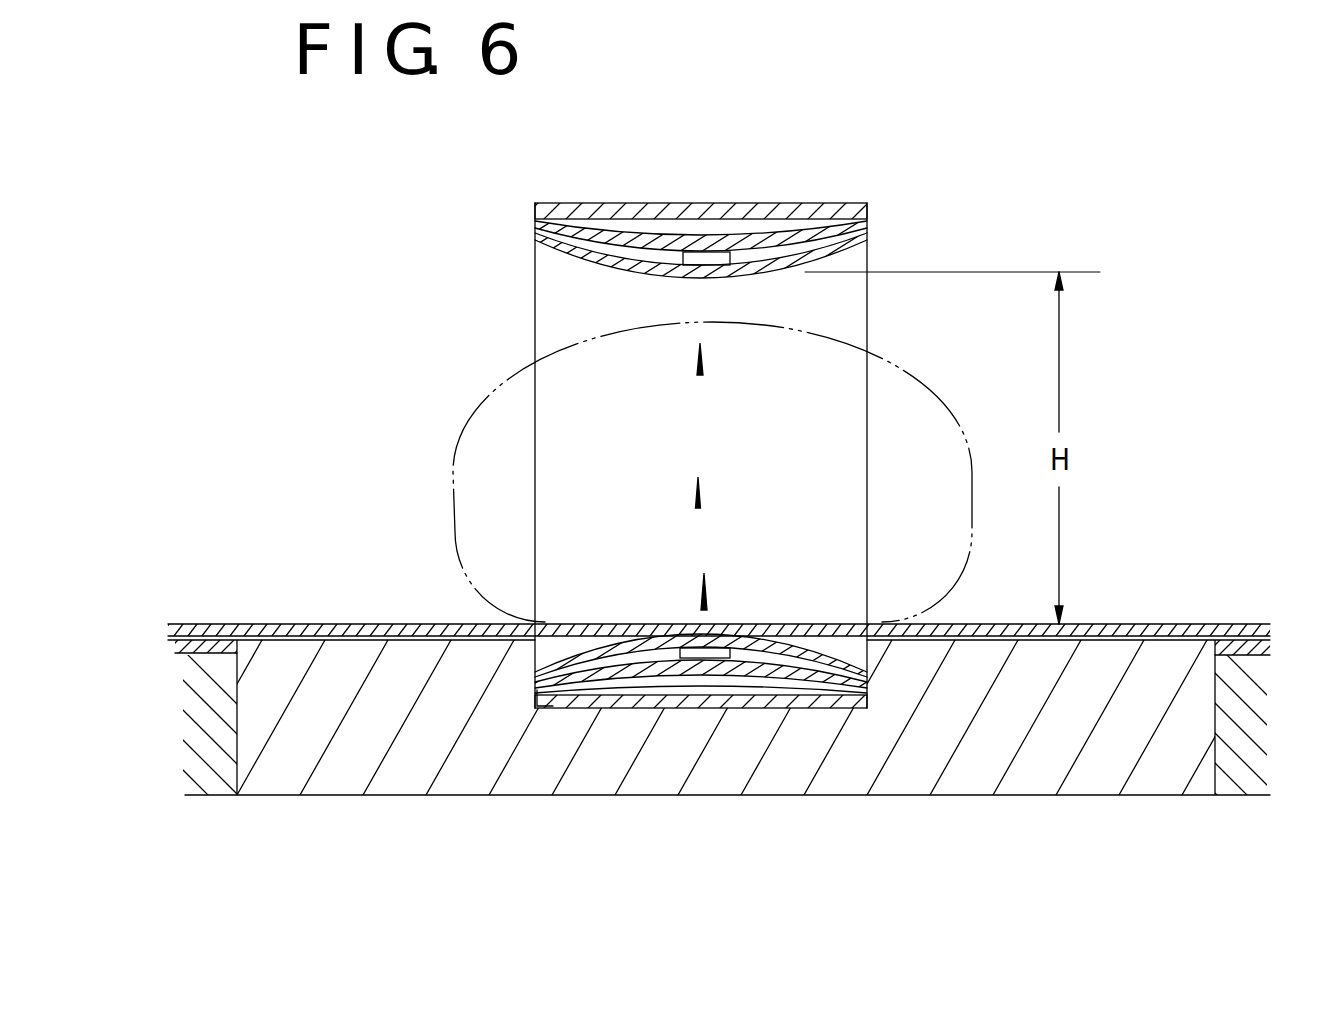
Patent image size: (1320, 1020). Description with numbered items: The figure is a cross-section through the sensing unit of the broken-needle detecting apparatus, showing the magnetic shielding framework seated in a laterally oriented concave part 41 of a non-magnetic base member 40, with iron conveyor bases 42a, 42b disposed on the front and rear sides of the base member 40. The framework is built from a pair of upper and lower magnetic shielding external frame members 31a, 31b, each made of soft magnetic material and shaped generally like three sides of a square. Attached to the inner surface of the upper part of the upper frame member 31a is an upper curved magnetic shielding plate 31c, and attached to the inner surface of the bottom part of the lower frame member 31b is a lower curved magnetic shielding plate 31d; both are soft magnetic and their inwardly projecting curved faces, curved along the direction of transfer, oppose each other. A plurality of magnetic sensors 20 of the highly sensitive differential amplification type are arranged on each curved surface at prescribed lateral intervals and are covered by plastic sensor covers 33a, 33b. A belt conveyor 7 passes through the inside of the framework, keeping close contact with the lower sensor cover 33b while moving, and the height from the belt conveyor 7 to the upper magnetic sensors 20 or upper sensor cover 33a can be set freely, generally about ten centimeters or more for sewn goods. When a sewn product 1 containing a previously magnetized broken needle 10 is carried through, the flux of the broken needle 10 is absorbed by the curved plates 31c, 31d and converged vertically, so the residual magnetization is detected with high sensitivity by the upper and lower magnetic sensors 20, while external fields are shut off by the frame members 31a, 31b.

The sewn product 1 is at (453, 460).
The belt conveyor 7 is at (1175, 624).
The broken needle 10 is at (698, 487).
The magnetic sensors 20 is at (708, 252).
The upper magnetic shielding external frame member 31a is at (613, 203).
The lower magnetic shielding external frame member 31b is at (658, 700).
The upper curved magnetic shielding plate 31c is at (788, 235).
The lower curved magnetic shielding plate 31d is at (797, 676).
The upper sensor cover 33a is at (577, 248).
The lower sensor cover 33b is at (575, 647).
The base member 40 is at (987, 766).
The concave part 41 is at (556, 703).
The conveyor base 42a is at (1250, 780).
The conveyor base 42b is at (207, 783).